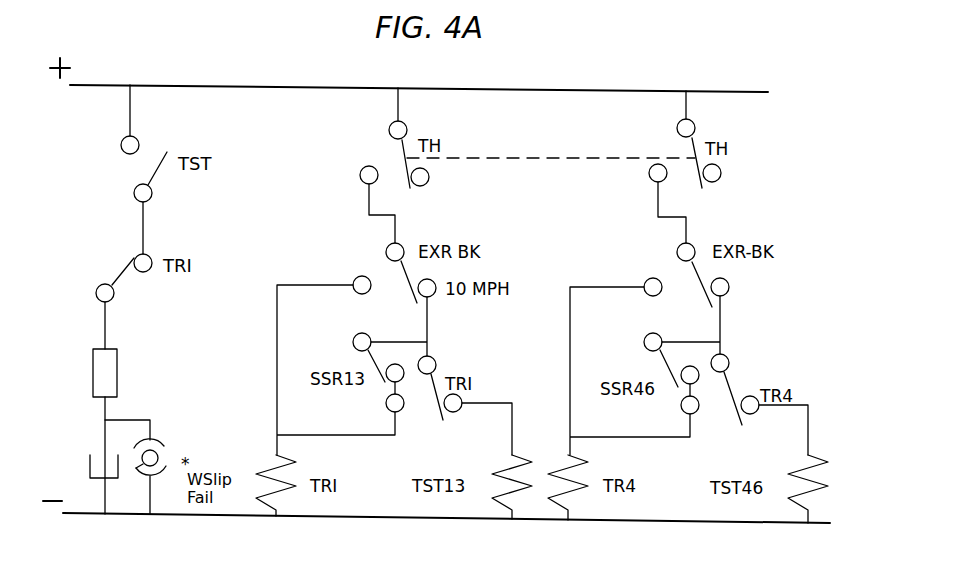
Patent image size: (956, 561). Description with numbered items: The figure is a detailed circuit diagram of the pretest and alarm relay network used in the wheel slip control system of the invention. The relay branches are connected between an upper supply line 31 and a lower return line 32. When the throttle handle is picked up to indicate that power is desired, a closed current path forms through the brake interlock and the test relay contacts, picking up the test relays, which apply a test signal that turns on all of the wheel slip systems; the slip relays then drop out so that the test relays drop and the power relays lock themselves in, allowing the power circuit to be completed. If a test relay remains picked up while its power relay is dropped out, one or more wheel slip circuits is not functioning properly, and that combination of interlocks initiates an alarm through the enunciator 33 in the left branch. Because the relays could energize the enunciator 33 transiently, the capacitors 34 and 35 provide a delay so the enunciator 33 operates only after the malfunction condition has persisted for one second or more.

The positive supply bus 31 is at (606, 92).
The negative supply bus 32 is at (637, 522).
The enunciator 33 is at (164, 446).
The capacitor 34 is at (118, 378).
The capacitor 35 is at (90, 468).